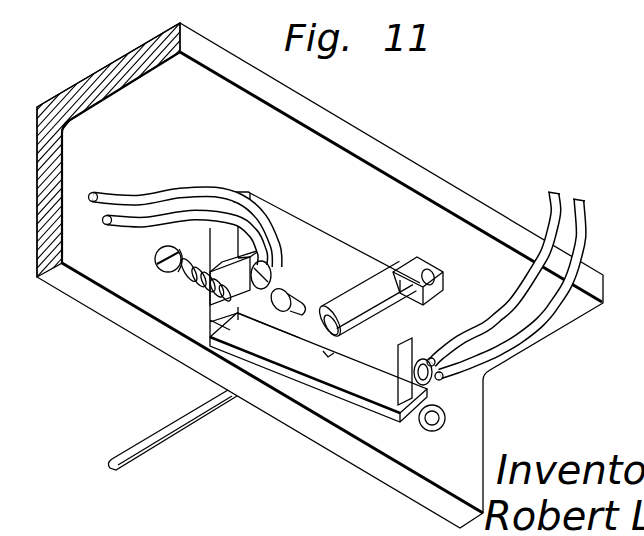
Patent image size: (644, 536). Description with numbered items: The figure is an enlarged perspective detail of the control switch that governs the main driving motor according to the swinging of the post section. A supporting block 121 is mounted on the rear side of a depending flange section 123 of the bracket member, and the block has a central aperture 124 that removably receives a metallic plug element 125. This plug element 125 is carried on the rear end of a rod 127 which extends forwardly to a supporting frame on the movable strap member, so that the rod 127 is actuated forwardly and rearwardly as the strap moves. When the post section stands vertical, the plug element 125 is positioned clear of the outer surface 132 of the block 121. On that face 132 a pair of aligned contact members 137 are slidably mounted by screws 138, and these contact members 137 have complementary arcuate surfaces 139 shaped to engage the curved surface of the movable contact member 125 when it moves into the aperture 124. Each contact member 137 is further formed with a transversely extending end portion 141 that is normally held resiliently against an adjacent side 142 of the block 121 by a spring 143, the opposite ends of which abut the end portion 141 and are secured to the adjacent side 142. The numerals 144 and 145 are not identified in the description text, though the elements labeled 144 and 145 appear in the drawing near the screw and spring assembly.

The supporting block 121 is at (323, 397).
The depending flange section 123 is at (385, 477).
The central aperture 124 is at (333, 357).
The metallic plug element 125 is at (378, 283).
The rod 127 is at (141, 443).
The outer surface 132 is at (357, 382).
The contact members 137 is at (300, 297).
The screws 138 is at (277, 293).
The arcuate surfaces 139 is at (327, 295).
The transversely extending end portion 141 is at (210, 313).
The adjacent side 142 is at (238, 322).
The spring 143 is at (190, 259).
The screw 144 is at (156, 255).
The spring 145 is at (186, 280).